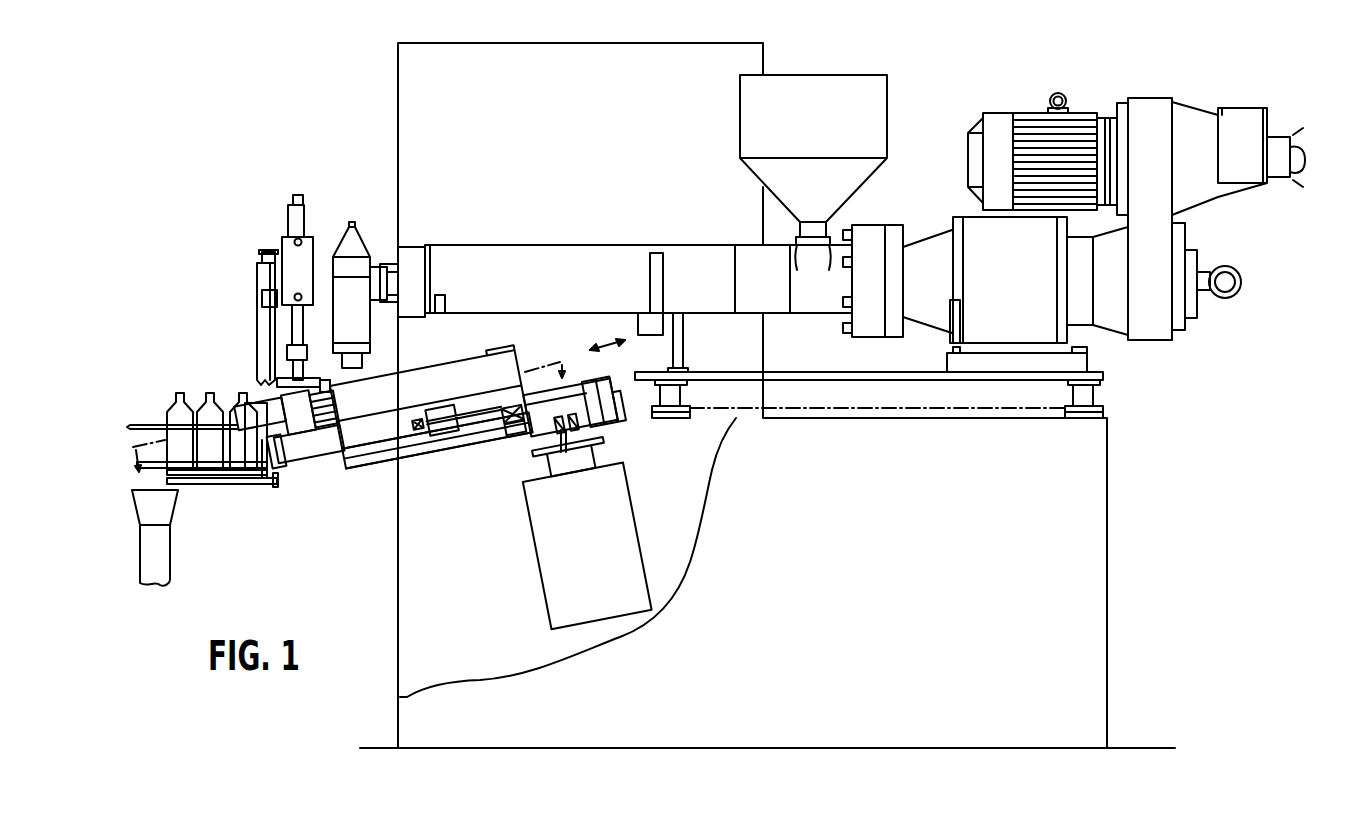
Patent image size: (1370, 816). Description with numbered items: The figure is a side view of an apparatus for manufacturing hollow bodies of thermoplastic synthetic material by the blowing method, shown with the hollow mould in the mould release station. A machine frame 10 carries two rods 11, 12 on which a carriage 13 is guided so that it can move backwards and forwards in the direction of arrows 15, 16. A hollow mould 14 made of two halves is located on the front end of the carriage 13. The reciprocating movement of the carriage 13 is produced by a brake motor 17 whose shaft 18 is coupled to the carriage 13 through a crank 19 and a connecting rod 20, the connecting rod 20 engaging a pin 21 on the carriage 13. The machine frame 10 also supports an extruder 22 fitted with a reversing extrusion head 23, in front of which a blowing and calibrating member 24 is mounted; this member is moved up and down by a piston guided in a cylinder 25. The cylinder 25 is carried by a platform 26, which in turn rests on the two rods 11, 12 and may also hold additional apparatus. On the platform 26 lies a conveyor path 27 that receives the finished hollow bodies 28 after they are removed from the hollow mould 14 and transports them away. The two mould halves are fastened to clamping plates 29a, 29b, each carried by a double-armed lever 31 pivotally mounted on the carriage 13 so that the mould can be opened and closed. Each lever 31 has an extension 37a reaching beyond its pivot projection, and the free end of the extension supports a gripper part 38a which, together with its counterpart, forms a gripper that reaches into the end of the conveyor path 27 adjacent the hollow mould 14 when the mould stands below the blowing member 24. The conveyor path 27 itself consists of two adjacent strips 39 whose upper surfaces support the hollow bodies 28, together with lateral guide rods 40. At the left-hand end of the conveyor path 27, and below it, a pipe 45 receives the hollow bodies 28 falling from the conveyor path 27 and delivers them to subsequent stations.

The machine frame 10 is at (1100, 625).
The rod 11 is at (410, 437).
The rod 12 is at (410, 437).
The carriage 13 is at (455, 372).
The hollow mould 14 is at (315, 380).
The arrow 15 is at (590, 350).
The arrow 16 is at (617, 342).
The brake motor 17 is at (627, 509).
The shaft 18 is at (577, 430).
The crank 19 is at (538, 423).
The connecting rod 20 is at (482, 408).
The pin 21 is at (425, 416).
The extruder 22 is at (697, 258).
The reversing extrusion head 23 is at (338, 297).
The blowing and calibrating member 24 is at (295, 368).
The cylinder 25 is at (285, 258).
The platform 26 is at (263, 313).
The conveyor path 27 is at (153, 437).
The hollow bodies 28 is at (188, 410).
The clamping plate 29a is at (332, 394).
The clamping plate 29b is at (332, 394).
The double-armed lever 31 is at (340, 445).
The extension 37a is at (290, 440).
The gripper part 38a is at (262, 458).
The strip 39 is at (205, 480).
The lateral guide rod 40 is at (137, 462).
The pipe 45 is at (170, 521).